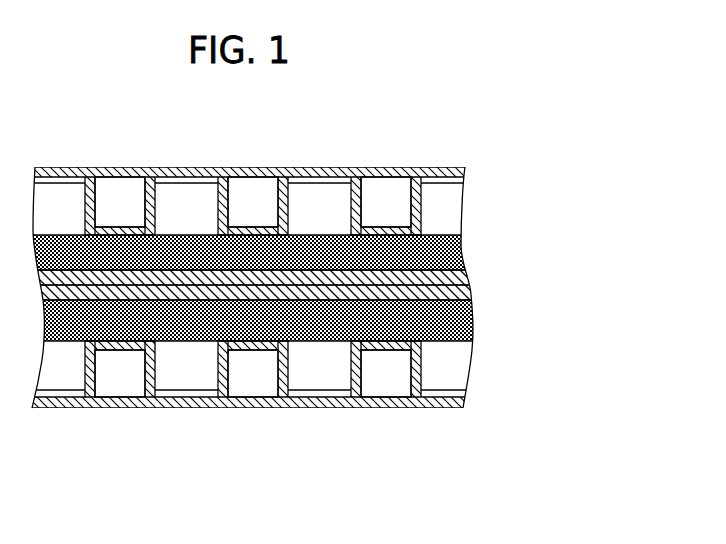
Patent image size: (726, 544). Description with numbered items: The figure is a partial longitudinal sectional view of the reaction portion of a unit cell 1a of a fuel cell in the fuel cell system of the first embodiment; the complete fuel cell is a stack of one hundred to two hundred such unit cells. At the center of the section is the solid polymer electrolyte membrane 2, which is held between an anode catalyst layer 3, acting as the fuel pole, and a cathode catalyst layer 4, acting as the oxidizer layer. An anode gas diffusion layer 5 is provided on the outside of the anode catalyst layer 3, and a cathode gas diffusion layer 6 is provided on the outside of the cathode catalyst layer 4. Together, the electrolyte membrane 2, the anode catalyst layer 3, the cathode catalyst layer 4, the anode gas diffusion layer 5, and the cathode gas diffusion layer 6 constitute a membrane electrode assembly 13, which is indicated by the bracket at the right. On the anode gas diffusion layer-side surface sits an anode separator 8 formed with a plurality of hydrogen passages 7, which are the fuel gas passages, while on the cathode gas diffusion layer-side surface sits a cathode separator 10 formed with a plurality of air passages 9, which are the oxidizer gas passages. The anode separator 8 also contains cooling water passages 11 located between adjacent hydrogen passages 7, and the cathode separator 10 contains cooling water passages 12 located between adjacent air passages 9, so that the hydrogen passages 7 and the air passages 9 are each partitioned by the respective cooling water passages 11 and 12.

The unit cell 1a is at (397, 101).
The solid polymer electrolyte membrane 2 is at (465, 292).
The anode catalyst layer 3 is at (466, 279).
The cathode catalyst layer 4 is at (470, 303).
The anode gas diffusion layer 5 is at (462, 253).
The cathode gas diffusion layer 6 is at (280, 352).
The hydrogen passages 7 is at (318, 195).
The anode separator 8 is at (185, 177).
The air passages 9 is at (318, 380).
The cathode separator 10 is at (183, 408).
The cooling water passages 11 is at (122, 192).
The cooling water passages 12 is at (117, 387).
The membrane electrode assembly 13 is at (308, 291).